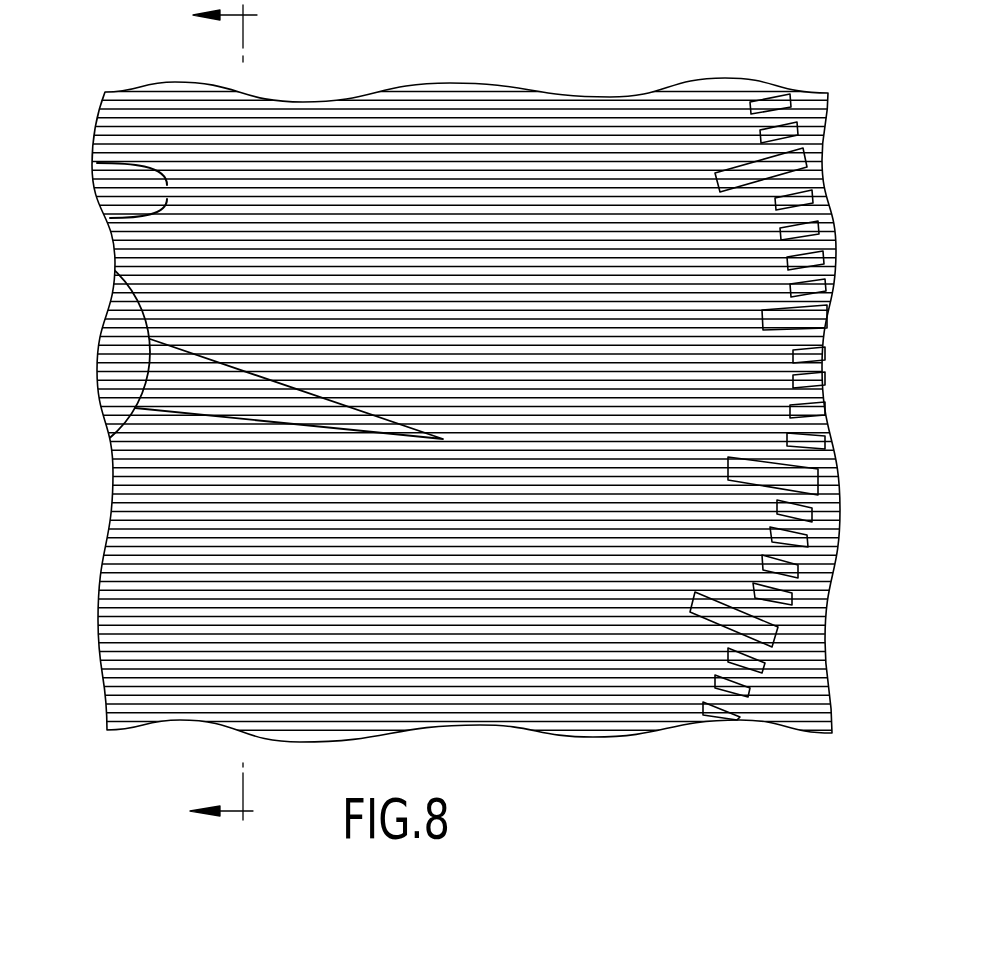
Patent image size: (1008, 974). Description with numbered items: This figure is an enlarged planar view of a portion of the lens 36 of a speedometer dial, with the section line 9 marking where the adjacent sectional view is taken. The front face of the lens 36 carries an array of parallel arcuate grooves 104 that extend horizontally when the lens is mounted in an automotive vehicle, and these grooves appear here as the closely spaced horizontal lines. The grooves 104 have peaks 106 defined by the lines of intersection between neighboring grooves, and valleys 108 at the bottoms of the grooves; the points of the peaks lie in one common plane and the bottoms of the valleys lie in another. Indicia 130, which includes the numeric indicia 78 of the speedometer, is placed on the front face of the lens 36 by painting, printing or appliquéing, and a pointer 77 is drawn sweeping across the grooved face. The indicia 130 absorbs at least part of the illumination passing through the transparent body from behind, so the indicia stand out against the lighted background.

The lens 36 is at (386, 189).
The parallel arcuate grooves 104 is at (184, 121).
The peaks 106 is at (97, 163).
The valleys 108 is at (110, 218).
The pointer 77 is at (237, 403).
The numeric indicia 78 is at (632, 162).
The indicia 130 is at (672, 390).
The section line 9- 9 is at (211, 417).